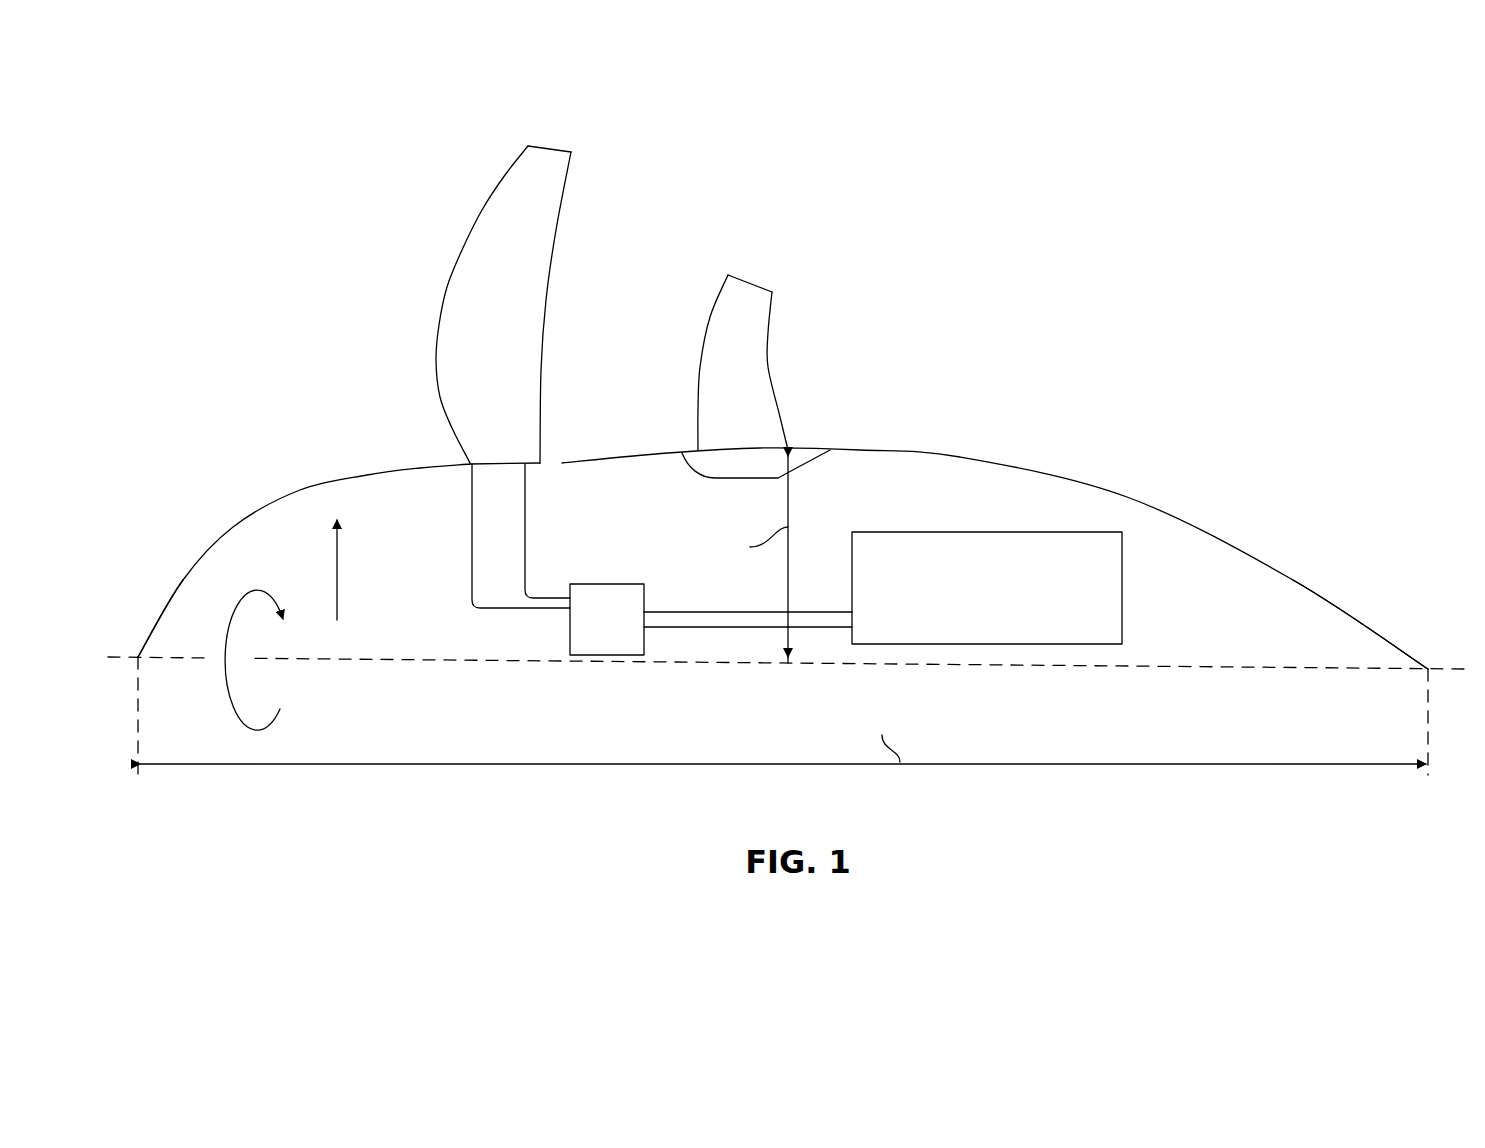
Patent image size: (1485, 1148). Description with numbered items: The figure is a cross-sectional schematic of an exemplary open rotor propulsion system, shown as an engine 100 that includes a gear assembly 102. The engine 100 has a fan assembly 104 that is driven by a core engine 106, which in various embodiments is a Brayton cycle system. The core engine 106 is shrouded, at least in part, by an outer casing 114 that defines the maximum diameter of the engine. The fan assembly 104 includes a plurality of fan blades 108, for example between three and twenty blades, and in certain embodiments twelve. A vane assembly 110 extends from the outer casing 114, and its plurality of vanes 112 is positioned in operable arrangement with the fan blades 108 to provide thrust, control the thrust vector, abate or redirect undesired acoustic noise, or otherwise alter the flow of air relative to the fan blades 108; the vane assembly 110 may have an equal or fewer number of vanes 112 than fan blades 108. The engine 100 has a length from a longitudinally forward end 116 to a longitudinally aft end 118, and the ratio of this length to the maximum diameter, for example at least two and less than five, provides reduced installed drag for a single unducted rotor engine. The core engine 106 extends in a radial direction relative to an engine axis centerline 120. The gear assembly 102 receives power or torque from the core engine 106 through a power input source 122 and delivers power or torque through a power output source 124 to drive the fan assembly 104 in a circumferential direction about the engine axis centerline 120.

The engine 100 is at (1086, 226).
The gear assembly 102 is at (607, 655).
The fan assembly 104 is at (497, 294).
The core engine 106 is at (1122, 587).
The fan blades 108 is at (518, 232).
The vane assembly 110 is at (741, 376).
The vanes 112 is at (732, 365).
The outer casing 114 is at (1000, 460).
The longitudinally forward end 116 is at (136, 654).
The longitudinally aft end 118 is at (1430, 665).
The engine axis centerline 120 is at (443, 660).
The power input source 122 is at (745, 627).
The power output source 124 is at (513, 608).